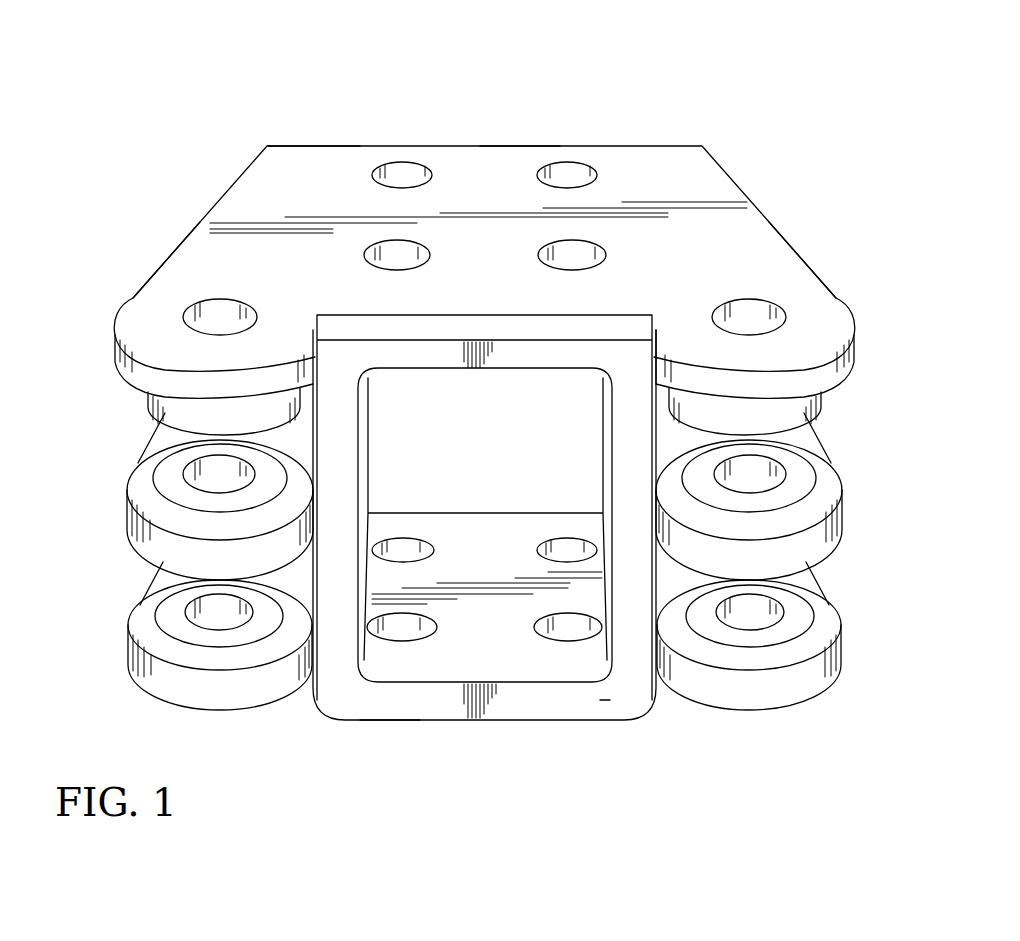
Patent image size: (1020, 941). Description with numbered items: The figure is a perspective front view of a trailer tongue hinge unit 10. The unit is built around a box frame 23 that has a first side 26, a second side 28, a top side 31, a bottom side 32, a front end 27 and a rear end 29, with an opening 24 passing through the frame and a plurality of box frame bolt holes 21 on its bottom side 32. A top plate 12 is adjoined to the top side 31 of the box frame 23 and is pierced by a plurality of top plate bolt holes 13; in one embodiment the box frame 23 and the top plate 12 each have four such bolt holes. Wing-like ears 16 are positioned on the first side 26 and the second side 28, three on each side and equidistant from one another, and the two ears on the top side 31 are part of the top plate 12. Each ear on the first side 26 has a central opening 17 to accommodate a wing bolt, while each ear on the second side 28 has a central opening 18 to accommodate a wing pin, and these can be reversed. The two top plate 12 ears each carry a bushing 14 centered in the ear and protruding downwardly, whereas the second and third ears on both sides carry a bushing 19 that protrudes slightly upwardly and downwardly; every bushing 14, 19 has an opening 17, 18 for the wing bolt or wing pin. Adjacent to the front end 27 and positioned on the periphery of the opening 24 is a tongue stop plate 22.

The trailer tongue hinge unit 10 is at (475, 413).
The top plate 12 is at (757, 261).
The top plate bolt holes 13 is at (412, 252).
The bushing 14 is at (163, 413).
The wing-like ears 16 is at (138, 325).
The central opening 17 is at (193, 310).
The central opening 18 is at (762, 318).
The bushing 19 is at (175, 487).
The box frame bolt holes 21 is at (427, 550).
The tongue stop plate 22 is at (596, 697).
The box frame 23 is at (632, 667).
The opening 24 is at (500, 413).
The first side 26 is at (207, 213).
The front end 27 is at (677, 422).
The second side 28 is at (767, 210).
The rear end 29 is at (520, 146).
The top side 31 is at (347, 147).
The bottom side 32 is at (390, 722).